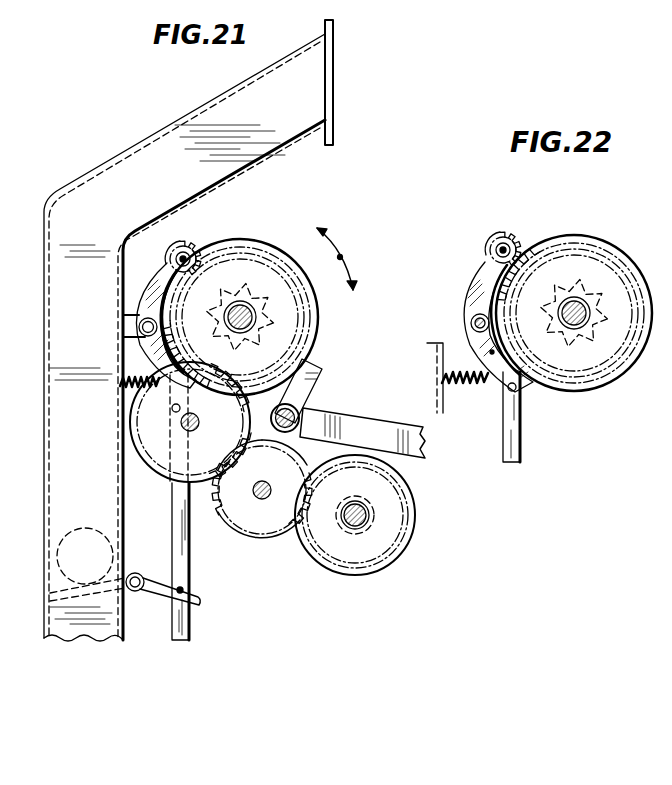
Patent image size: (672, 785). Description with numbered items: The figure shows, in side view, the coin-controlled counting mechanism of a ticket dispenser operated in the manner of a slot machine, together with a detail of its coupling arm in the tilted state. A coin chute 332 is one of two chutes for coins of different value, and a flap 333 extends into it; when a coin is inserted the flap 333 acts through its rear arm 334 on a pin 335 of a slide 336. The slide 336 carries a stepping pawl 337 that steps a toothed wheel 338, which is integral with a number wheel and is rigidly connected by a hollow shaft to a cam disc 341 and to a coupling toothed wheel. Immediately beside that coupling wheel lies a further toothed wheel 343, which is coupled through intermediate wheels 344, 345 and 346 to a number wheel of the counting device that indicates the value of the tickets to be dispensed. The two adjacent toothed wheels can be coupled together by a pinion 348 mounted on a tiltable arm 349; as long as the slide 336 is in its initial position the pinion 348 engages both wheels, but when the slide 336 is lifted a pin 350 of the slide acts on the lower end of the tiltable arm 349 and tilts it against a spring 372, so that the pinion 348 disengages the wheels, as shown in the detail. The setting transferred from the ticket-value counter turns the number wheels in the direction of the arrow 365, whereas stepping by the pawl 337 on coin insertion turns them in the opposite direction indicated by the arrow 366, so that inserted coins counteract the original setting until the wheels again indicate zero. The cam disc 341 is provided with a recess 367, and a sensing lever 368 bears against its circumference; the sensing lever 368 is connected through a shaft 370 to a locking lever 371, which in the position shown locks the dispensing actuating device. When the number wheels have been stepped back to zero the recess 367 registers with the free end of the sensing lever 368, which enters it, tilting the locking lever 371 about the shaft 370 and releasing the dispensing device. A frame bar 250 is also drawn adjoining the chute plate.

In FIG. 21, the frame bar 250 is at (336, 97).
In FIG. 21, the coin chute 332 is at (153, 148).
In FIG. 22, the coin chute 332 is at (432, 407).
In FIG. 21, the flap 333 is at (68, 597).
In FIG. 21, the rear arm 334 is at (201, 604).
In FIG. 21, the pin 335 is at (184, 589).
In FIG. 21, the slide 336 is at (176, 550).
In FIG. 22, the slide 336 is at (522, 449).
In FIG. 21, the pawl 337 is at (197, 352).
In FIG. 21, the toothed wheel 338 is at (265, 270).
In FIG. 22, the toothed wheel 338 is at (622, 367).
In FIG. 21, the cam disc 341 is at (317, 319).
In FIG. 22, the cam disc 341 is at (593, 244).
In FIG. 21, the toothed wheel 343 is at (234, 262).
In FIG. 22, the toothed wheel 343 is at (590, 374).
In FIG. 21, the intermediate wheel 344 is at (160, 466).
In FIG. 21, the intermediate wheel 345 is at (263, 528).
In FIG. 21, the intermediate wheel 346 is at (347, 563).
In FIG. 21, the pinion 348 is at (181, 243).
In FIG. 22, the pinion 348 is at (499, 237).
In FIG. 21, the tiltable arm 349 is at (143, 295).
In FIG. 22, the tiltable arm 349 is at (487, 276).
In FIG. 21, the pin 350 is at (181, 408).
In FIG. 22, the pin 350 is at (517, 392).
In FIG. 21, the arrow 365 is at (321, 229).
In FIG. 21, the arrow 366 is at (356, 289).
In FIG. 21, the recess 367 is at (303, 349).
In FIG. 21, the sensing lever 368 is at (310, 383).
In FIG. 21, the shaft 370 is at (301, 414).
In FIG. 21, the locking lever 371 is at (424, 450).
In FIG. 21, the spring 372 is at (120, 399).
In FIG. 22, the spring 372 is at (454, 378).